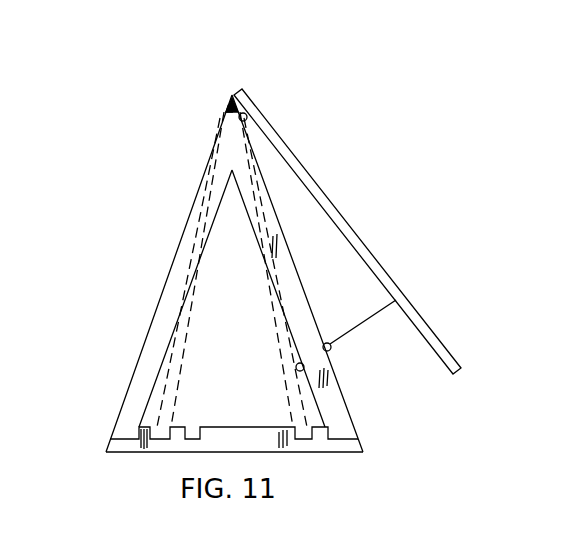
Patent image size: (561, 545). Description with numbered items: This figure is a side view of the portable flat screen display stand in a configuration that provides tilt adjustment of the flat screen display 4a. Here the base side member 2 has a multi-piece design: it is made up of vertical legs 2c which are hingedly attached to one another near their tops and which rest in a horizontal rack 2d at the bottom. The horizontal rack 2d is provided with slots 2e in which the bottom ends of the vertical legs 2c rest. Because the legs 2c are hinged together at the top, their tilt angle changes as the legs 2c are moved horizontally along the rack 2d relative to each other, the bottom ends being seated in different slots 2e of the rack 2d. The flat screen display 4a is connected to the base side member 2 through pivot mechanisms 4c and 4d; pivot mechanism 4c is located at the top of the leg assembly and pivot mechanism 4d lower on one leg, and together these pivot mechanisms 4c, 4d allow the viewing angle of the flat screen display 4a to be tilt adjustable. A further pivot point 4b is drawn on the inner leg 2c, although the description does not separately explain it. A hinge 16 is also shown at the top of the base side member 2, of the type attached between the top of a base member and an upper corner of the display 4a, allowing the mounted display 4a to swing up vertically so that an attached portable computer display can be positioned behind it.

The base side member 2 is at (180, 245).
The vertical legs 2c is at (153, 328).
The horizontal rack 2d is at (362, 440).
The slots 2e is at (112, 428).
The flat screen display 4a is at (363, 243).
The pivot pin of panel 4b is at (296, 367).
The pivot mechanism 4c is at (228, 103).
The pivot mechanism 4d is at (368, 322).
The hinge 16 is at (220, 116).